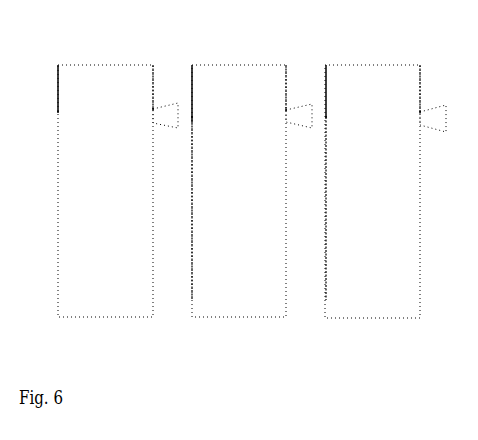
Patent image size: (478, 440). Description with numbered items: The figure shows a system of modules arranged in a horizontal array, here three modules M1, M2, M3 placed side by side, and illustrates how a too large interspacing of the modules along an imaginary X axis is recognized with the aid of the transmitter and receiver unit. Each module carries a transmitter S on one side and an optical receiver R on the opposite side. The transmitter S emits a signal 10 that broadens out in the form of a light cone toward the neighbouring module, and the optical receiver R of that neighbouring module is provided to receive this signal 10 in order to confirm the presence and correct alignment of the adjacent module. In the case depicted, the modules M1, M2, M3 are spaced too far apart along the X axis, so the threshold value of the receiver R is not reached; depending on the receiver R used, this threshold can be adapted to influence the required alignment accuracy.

The module M1 is at (97, 318).
The module M2 is at (235, 318).
The module M3 is at (375, 319).
The signal 10 is at (165, 95).
The transmitter S is at (152, 109).
The optical receiver R is at (58, 112).